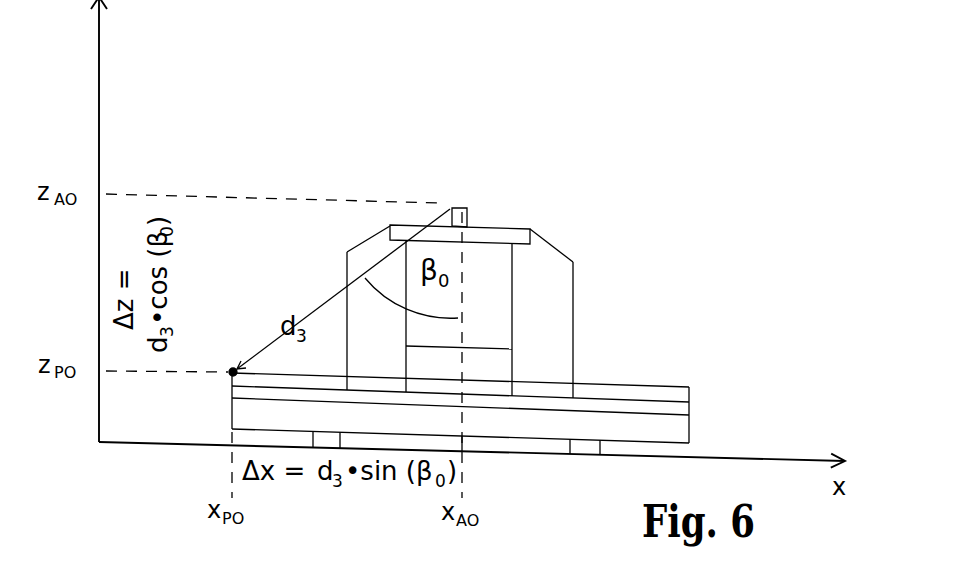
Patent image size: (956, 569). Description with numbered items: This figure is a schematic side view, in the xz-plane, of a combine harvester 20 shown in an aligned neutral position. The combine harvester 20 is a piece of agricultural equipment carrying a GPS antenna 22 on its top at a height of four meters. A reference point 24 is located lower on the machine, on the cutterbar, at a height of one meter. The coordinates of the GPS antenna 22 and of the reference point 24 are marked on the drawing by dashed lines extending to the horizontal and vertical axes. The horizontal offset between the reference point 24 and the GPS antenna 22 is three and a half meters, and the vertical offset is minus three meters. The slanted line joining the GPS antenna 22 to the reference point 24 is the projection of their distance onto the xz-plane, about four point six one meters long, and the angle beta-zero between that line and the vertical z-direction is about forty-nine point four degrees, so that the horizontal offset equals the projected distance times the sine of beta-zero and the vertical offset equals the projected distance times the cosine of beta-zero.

The combine harvester 20 is at (619, 283).
The GPS antenna 22 is at (467, 208).
The reference point 24 is at (233, 368).